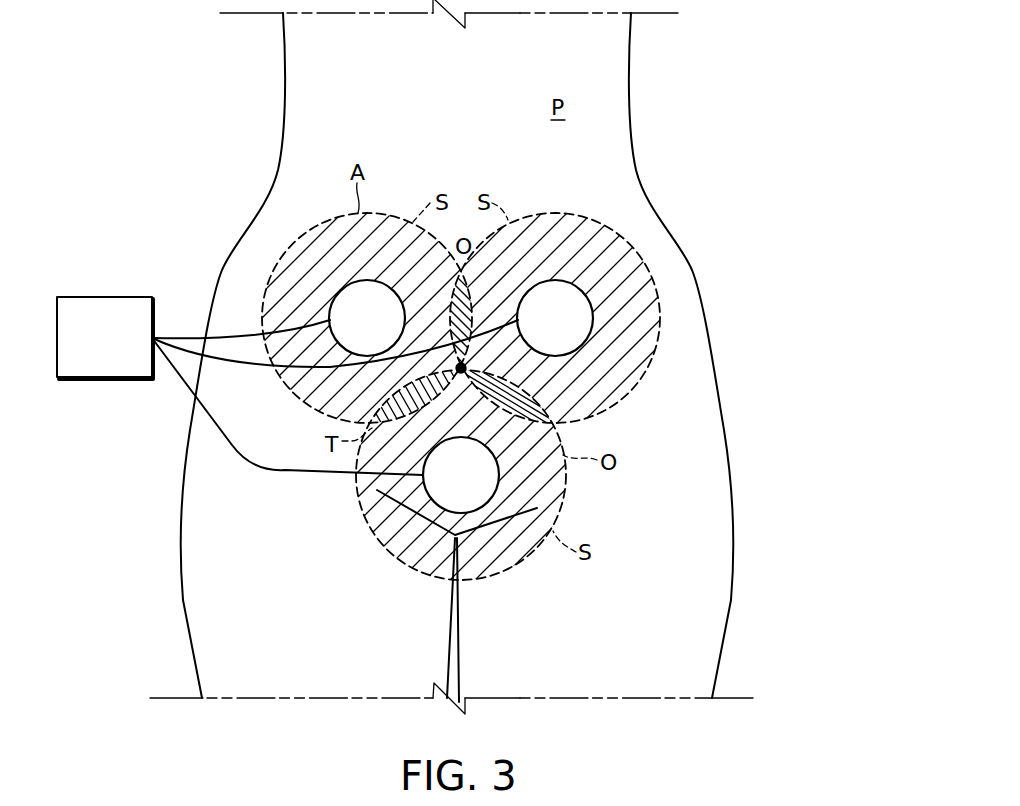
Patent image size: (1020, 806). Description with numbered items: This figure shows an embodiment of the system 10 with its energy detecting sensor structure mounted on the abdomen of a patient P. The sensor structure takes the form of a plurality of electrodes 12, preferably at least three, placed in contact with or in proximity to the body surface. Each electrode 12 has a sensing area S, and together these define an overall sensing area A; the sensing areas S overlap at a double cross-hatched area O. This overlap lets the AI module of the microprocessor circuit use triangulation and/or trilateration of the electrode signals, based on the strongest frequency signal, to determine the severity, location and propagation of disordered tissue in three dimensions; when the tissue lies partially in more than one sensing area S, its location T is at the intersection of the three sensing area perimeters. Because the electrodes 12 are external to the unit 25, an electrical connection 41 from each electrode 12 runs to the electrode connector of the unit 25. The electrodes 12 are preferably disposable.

The system 10 is at (749, 444).
The electrode 12 is at (378, 290).
The unit 25 is at (122, 350).
The electrical connection 41 is at (195, 337).